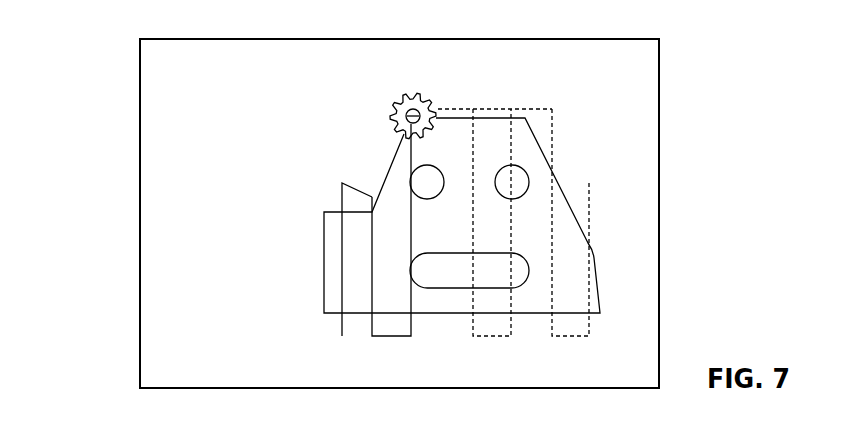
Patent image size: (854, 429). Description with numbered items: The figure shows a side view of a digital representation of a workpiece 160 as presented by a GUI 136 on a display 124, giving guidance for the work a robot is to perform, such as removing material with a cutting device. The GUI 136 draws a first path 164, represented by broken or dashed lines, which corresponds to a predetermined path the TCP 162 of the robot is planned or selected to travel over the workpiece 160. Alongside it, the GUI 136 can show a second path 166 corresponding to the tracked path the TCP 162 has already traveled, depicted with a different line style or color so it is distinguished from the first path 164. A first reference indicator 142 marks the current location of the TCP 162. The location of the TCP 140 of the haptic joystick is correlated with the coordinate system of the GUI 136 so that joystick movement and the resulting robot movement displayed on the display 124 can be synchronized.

The display 124 is at (140, 95).
The GUI 136 is at (642, 168).
The TCP of the haptic joystick 140 is at (323, 70).
The TCP of the robot 162 is at (323, 70).
The first reference indicator 142 is at (412, 97).
The workpiece 160 is at (442, 302).
The first path 164 is at (552, 133).
The second path 166 is at (342, 200).